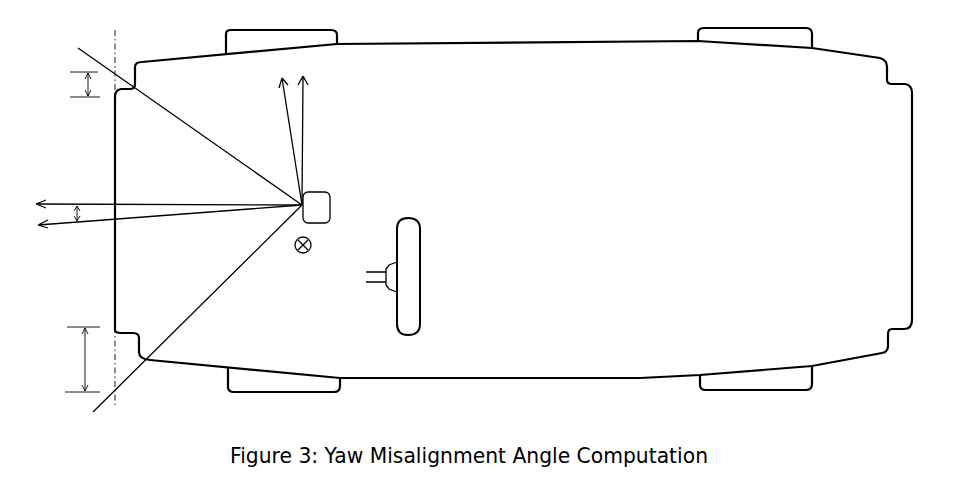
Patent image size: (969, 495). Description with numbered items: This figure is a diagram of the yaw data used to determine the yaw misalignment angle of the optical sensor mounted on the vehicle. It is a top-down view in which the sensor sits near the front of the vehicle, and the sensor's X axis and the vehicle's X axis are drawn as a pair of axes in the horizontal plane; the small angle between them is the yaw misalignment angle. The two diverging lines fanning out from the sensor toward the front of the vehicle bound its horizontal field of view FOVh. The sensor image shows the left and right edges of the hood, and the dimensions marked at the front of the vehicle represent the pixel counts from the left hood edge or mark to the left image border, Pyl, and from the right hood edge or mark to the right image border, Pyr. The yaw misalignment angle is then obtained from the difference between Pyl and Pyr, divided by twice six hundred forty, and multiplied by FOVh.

The element vehicle is at (513, 210).
The optical sensor is at (338, 195).
The horizontal field of view FOVh is at (173, 225).
The sensor and vehicle X axes is at (182, 176).
The right hood edge pixel count Pyr is at (79, 84).
The left hood edge pixel count Pyl is at (81, 359).